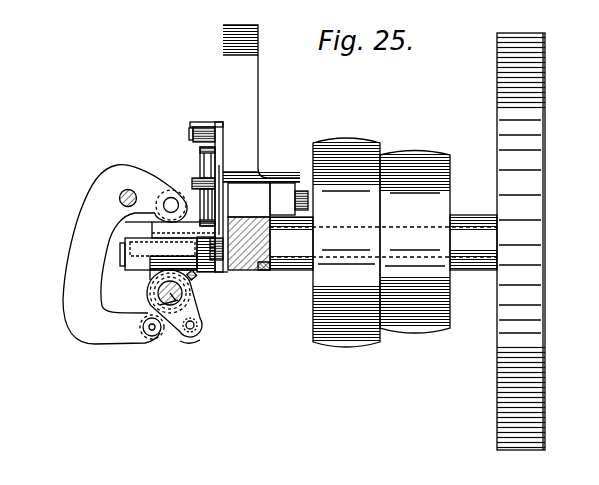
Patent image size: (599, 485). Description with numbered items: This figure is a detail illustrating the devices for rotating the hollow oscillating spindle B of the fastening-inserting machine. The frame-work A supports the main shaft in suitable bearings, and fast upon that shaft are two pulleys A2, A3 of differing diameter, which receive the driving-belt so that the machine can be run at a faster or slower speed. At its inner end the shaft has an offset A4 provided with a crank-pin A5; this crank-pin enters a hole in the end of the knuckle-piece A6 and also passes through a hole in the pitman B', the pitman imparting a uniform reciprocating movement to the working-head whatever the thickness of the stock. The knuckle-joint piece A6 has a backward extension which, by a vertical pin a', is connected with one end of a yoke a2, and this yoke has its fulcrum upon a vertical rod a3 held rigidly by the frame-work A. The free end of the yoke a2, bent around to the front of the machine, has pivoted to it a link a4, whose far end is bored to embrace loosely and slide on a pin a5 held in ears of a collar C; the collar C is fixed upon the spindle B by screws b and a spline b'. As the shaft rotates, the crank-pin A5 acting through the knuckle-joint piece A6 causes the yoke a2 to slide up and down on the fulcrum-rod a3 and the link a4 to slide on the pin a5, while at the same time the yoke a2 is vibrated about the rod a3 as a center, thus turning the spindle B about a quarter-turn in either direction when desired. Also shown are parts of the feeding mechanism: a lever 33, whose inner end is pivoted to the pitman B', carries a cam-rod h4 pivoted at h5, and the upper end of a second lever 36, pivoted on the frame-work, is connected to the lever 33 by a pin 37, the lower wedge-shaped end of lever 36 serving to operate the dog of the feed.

The lever 33 is at (223, 151).
The cam-rod h4 is at (210, 122).
The pivot h5 is at (189, 132).
The lever 36 is at (200, 154).
The pin 37 is at (190, 194).
The yoke a2 is at (71, 242).
The arm a' is at (152, 192).
The vertical rod a3 is at (119, 198).
The knuckle-piece A6 is at (183, 230).
The crank-pin A5 is at (125, 254).
The pitman B' is at (126, 280).
The collar C is at (150, 303).
The hollow oscillating spindle B is at (154, 293).
The screws b is at (198, 278).
The spline b' is at (188, 297).
The link a4 is at (161, 334).
The pin a5 is at (199, 331).
The offset A4 is at (228, 271).
The frame-work A is at (266, 285).
The pulley A3 is at (346, 231).
The pulley A2 is at (415, 228).